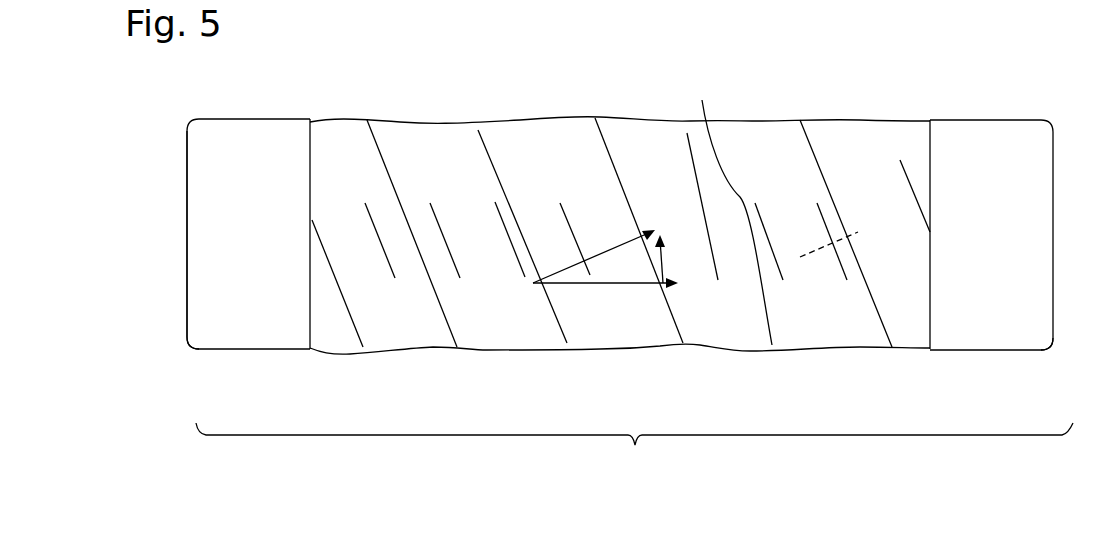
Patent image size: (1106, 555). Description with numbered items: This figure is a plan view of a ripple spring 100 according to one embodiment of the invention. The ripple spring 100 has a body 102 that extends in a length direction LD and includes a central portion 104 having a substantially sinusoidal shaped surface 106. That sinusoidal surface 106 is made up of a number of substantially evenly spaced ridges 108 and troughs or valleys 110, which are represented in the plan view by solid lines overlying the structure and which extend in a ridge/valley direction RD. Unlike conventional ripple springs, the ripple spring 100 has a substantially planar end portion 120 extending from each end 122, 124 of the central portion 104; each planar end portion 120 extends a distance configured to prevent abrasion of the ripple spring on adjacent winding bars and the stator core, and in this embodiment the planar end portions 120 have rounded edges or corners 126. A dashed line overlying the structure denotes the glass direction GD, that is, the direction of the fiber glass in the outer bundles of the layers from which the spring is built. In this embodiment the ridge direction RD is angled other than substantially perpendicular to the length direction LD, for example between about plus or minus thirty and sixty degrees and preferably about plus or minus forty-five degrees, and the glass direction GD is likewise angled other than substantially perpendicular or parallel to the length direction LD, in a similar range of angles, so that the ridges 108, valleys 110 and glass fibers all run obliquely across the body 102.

The ripple spring 100 is at (306, 108).
The body 102 is at (183, 139).
The central portion 104 is at (634, 450).
The substantially sinusoidal shaped surface 106 is at (375, 104).
The ridges 108 is at (450, 206).
The valleys 110 is at (799, 197).
The substantially planar end portion 120 is at (215, 287).
The end of central portion 122 is at (325, 338).
The end of central portion 124 is at (915, 330).
The rounded edge 126 is at (198, 338).
The length direction LD is at (620, 283).
The ridge/valley direction RD is at (623, 179).
The glass direction GD is at (856, 232).